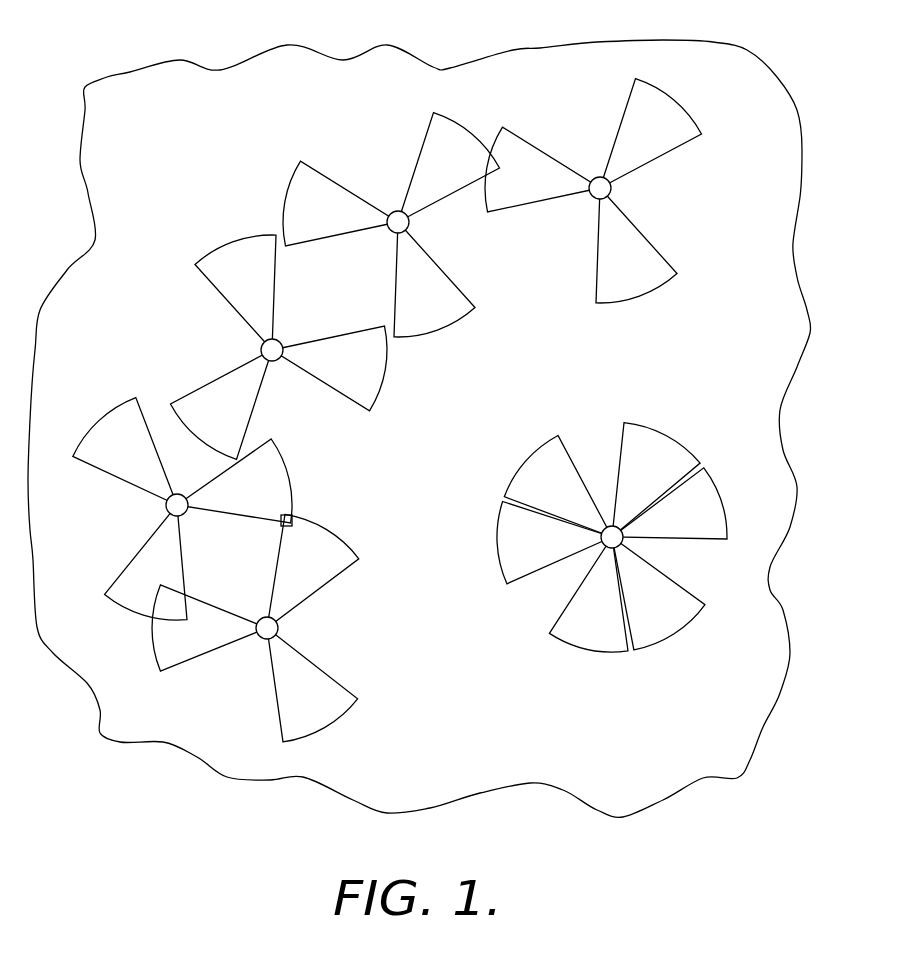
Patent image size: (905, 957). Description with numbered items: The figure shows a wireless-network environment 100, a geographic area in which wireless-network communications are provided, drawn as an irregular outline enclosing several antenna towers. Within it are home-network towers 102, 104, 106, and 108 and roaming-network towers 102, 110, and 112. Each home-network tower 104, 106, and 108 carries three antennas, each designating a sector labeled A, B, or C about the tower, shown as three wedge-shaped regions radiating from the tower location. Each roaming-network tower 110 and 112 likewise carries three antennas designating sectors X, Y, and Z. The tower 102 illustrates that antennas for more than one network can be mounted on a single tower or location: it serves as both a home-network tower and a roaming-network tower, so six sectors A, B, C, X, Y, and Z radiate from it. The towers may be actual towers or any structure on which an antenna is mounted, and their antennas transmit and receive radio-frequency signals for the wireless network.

The wireless-network environment 100 is at (543, 48).
The home-network tower and roaming-network tower 102 is at (620, 546).
The home-network tower 104 is at (611, 190).
The home-network tower 106 is at (279, 340).
The home-network tower 108 is at (278, 630).
The roaming-network tower 110 is at (397, 211).
The roaming-network tower 112 is at (184, 514).